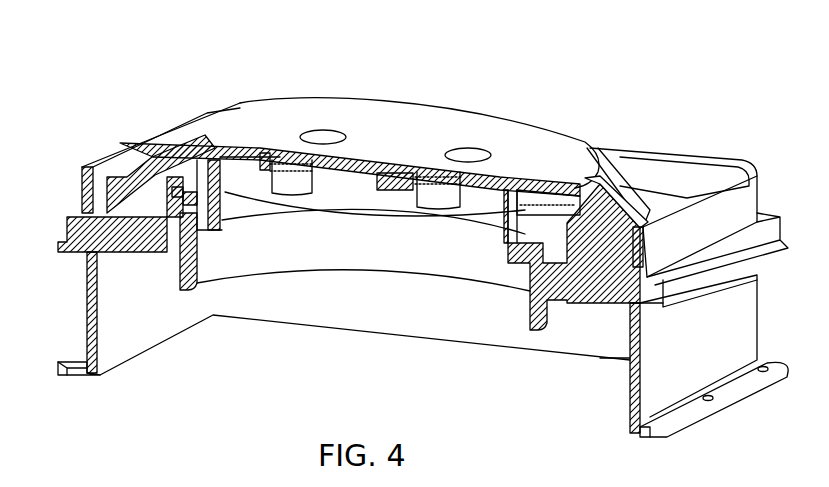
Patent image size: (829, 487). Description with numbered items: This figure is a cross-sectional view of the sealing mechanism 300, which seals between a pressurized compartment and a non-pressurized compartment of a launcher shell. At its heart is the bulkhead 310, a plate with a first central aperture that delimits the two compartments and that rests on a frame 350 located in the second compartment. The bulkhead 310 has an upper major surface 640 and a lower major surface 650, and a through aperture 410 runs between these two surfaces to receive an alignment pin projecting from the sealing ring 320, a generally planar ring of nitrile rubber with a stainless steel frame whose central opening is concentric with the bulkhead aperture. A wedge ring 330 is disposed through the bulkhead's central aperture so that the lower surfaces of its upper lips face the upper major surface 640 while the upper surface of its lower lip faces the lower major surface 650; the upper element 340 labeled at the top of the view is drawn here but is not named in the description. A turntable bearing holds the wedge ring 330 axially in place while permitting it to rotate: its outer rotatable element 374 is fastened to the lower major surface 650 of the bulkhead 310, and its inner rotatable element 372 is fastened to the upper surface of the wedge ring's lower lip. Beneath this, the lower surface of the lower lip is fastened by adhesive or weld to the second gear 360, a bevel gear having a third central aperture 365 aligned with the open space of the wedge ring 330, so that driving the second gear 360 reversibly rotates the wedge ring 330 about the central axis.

The sealing mechanism 300 is at (398, 92).
The bulkhead 310 is at (740, 197).
The sealing ring 320 is at (183, 167).
The wedge ring 330 is at (226, 192).
The diaphragm disc 340 is at (493, 130).
The frame 350 is at (703, 363).
The second gear 360 is at (553, 283).
The third central aperture 365 is at (352, 247).
The inner rotatable element 372 is at (518, 237).
The outer rotatable element 374 is at (100, 216).
The through aperture 410 is at (150, 168).
The upper major surface 640 is at (540, 215).
The lower major surface 650 is at (207, 215).